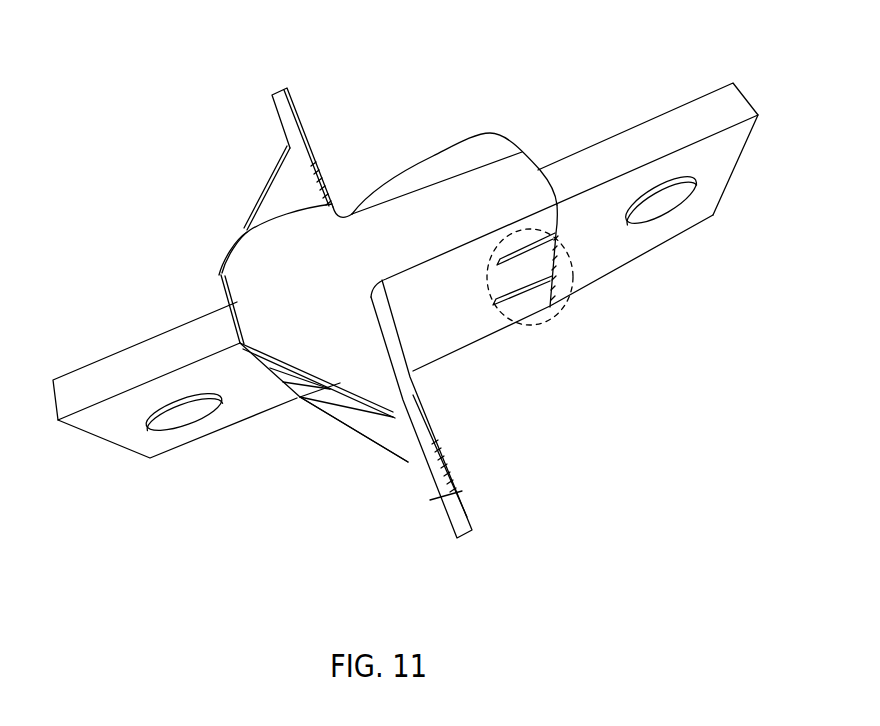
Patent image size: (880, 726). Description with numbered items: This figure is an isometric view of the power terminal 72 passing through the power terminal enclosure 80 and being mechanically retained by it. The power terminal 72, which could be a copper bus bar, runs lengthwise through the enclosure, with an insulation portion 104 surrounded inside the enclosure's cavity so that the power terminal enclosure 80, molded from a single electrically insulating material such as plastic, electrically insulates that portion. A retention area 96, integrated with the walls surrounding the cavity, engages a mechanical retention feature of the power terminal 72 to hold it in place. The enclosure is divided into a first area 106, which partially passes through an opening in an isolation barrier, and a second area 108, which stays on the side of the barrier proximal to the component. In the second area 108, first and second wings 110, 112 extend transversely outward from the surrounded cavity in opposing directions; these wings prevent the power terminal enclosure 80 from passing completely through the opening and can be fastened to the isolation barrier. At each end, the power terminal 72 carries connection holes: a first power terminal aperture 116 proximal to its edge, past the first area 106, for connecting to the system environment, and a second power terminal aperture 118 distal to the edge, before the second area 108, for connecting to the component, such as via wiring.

The power terminal 72 is at (398, 261).
The power terminal enclosure 80 is at (488, 322).
The retention area 96 is at (563, 303).
The insulation portion 104 is at (330, 197).
The first area 106 is at (488, 391).
The second area 108 is at (373, 498).
The first wing 110 is at (277, 118).
The second wing 112 is at (430, 492).
The first power terminal aperture 116 is at (645, 205).
The second power terminal aperture 118 is at (215, 412).